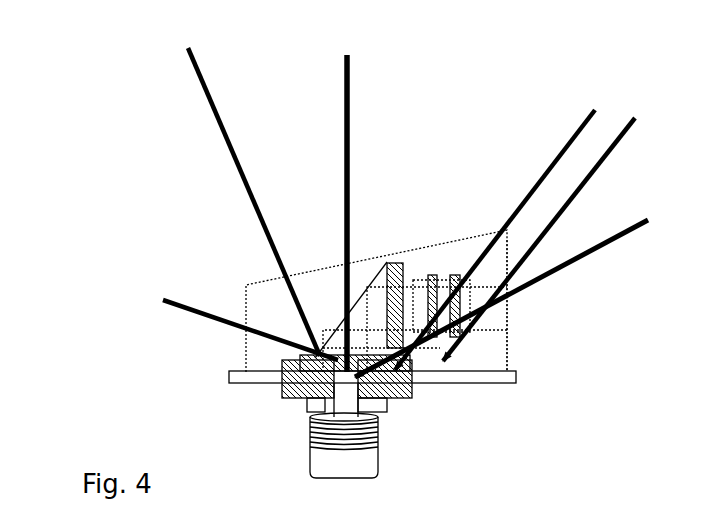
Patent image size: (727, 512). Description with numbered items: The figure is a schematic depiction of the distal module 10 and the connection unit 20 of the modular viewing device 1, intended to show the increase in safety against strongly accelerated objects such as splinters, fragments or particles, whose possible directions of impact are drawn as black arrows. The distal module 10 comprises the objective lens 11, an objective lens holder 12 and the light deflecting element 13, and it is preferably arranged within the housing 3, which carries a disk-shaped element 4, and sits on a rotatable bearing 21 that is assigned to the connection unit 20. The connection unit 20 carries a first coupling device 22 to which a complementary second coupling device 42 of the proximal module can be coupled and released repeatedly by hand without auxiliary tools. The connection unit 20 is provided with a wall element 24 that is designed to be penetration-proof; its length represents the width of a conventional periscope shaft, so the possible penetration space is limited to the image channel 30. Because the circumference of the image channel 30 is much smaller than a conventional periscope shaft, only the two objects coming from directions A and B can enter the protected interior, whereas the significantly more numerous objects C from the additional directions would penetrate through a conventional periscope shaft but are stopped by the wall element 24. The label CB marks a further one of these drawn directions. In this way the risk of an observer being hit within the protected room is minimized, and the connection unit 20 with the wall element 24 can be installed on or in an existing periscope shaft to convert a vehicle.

The modular viewing device 1 is at (150, 268).
The housing 3 is at (350, 256).
The disk-shaped element 4 is at (508, 312).
The distal module 10 is at (572, 245).
The objective lens 11 is at (472, 277).
The objective lens holder 12 is at (400, 263).
The light deflecting element 13 is at (342, 300).
The connection unit 20 is at (627, 352).
The rotatable bearing 21 is at (293, 357).
The first coupling device 22 is at (388, 406).
The wall element 24 is at (229, 368).
The image channel 30 is at (366, 421).
The second coupling device 42 is at (320, 462).
The direction A is at (349, 57).
The direction B is at (649, 221).
The objects C is at (186, 48).
The axis CB is at (168, 306).